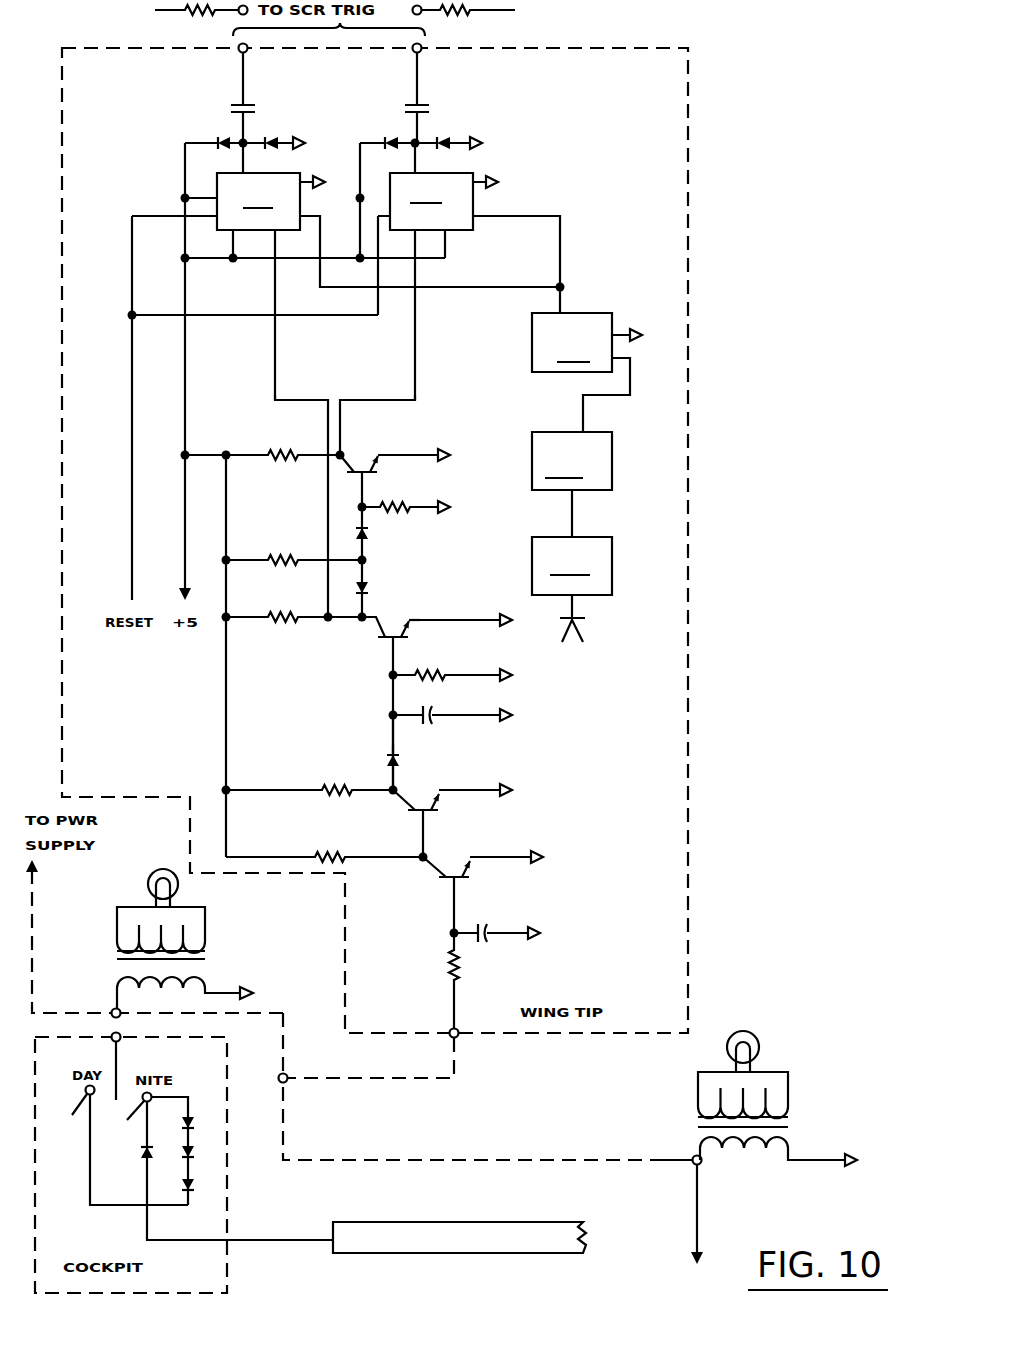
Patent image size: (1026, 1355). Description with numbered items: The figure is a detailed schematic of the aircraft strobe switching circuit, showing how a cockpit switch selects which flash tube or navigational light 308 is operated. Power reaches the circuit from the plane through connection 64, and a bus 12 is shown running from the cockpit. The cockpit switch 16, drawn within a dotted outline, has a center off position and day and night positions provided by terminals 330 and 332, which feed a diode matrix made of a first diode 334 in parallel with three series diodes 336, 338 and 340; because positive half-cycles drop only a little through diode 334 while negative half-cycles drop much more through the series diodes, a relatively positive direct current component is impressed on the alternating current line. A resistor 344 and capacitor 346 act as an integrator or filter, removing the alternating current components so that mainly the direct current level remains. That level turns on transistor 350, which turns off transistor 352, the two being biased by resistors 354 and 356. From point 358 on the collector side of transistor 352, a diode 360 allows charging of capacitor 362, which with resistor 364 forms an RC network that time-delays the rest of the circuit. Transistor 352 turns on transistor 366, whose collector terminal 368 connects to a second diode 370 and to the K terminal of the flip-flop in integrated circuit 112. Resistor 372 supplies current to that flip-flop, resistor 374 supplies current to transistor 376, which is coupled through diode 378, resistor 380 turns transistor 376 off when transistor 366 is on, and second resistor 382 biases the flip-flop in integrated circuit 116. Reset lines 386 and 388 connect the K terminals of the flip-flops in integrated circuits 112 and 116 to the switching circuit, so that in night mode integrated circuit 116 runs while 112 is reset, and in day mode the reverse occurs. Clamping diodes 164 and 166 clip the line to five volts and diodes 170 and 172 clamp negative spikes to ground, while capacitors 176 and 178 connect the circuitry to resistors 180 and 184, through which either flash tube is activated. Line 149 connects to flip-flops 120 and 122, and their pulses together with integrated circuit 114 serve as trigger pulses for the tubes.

The bus 12 is at (437, 1253).
The cockpit switch 16 is at (252, 1153).
The connection 64 is at (425, 1079).
The integrated circuit 112 is at (271, 186).
The integrated circuit 116 is at (444, 186).
The integrated circuit 114 is at (587, 372).
The flip-flop 122 is at (572, 484).
The flip-flop 120 is at (572, 566).
The line 149 is at (590, 618).
The diode 164 is at (216, 140).
The diode 166 is at (393, 138).
The diode 170 is at (270, 135).
The diode 172 is at (445, 135).
The capacitor 176 is at (228, 106).
The capacitor 178 is at (428, 110).
The resistor 180 is at (200, 16).
The resistor 184 is at (447, 12).
The navigational light 308 is at (752, 1032).
The terminal 330 is at (115, 1146).
The terminal 332 is at (215, 1167).
The first diode 334 is at (143, 1150).
The diode 336 is at (196, 1187).
The diode 338 is at (196, 1150).
The diode 340 is at (196, 1118).
The resistor 344 is at (449, 965).
The capacitor 346 is at (483, 928).
The transistor 350 is at (440, 878).
The transistor 352 is at (414, 812).
The resistor 354 is at (336, 852).
The resistor 356 is at (330, 788).
The point 358 is at (390, 788).
The diode 360 is at (392, 752).
The capacitor 362 is at (433, 710).
The resistor 364 is at (420, 671).
The transistor 366 is at (380, 645).
The collector terminal 368 is at (386, 612).
The second diode 370 is at (356, 588).
The resistor 372 is at (300, 627).
The resistor 374 is at (300, 557).
The transistor 376 is at (352, 460).
The diode 378 is at (370, 537).
The resistor 380 is at (383, 504).
The second resistor 382 is at (298, 465).
The reset line 386 is at (275, 385).
The reset line 388 is at (415, 385).